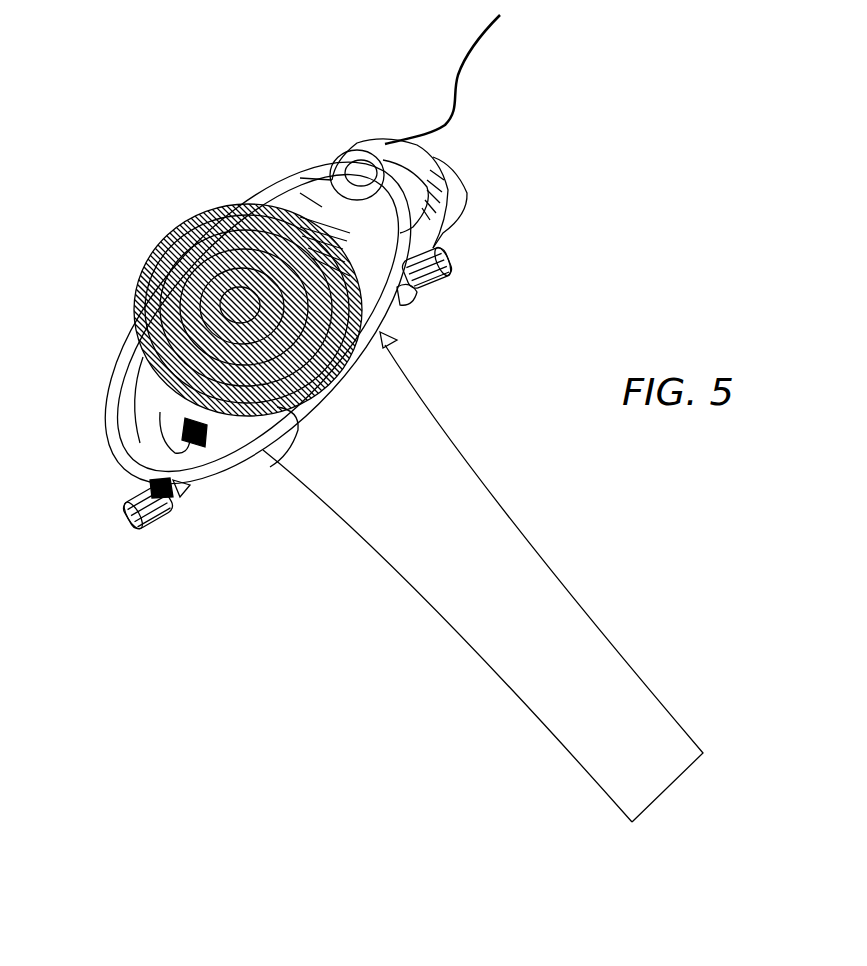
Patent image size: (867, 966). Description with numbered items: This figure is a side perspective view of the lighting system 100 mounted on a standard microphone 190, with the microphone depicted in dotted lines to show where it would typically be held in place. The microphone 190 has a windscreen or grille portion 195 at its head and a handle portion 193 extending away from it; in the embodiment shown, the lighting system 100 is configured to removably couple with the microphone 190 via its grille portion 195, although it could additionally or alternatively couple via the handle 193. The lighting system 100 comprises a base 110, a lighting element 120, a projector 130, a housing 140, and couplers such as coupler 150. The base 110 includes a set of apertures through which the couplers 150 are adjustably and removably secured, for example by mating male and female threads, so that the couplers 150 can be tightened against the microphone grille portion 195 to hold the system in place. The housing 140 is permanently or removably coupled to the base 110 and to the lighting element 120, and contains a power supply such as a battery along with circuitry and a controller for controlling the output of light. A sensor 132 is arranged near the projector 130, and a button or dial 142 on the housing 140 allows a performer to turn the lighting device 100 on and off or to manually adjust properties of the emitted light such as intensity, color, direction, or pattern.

The lighting system 100 is at (148, 110).
The base 110 is at (283, 463).
The lighting element 120 is at (290, 184).
The projector 130 is at (347, 178).
The sensor 132 is at (471, 74).
The housing 140 is at (437, 246).
The button 142 is at (448, 172).
The coupler 150 is at (143, 523).
The microphone 190 is at (404, 579).
The handle portion 193 is at (468, 592).
The windscreen or grille portion 195 is at (150, 316).